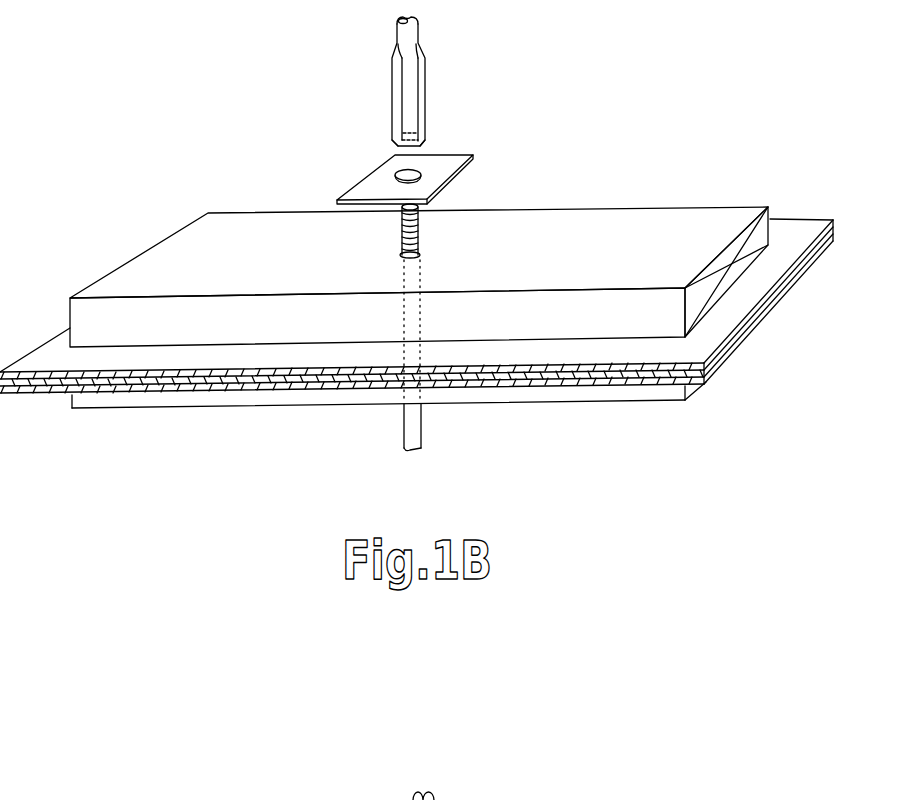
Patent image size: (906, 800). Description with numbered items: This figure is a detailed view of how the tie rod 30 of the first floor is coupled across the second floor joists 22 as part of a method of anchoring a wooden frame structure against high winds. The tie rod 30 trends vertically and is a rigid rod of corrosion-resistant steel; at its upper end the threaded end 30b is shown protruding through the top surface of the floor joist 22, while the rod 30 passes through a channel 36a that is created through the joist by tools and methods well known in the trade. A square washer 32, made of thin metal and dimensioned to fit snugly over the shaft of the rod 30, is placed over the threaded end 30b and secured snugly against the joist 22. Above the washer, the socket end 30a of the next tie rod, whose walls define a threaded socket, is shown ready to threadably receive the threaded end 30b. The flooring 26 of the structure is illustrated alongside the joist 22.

The floor joist 22 is at (617, 261).
The flooring 26 is at (775, 312).
The tie rod 30 is at (426, 418).
The socket end 30a is at (428, 107).
The threaded end 30b is at (424, 227).
The washer 32 is at (375, 182).
The channel 36a is at (397, 288).